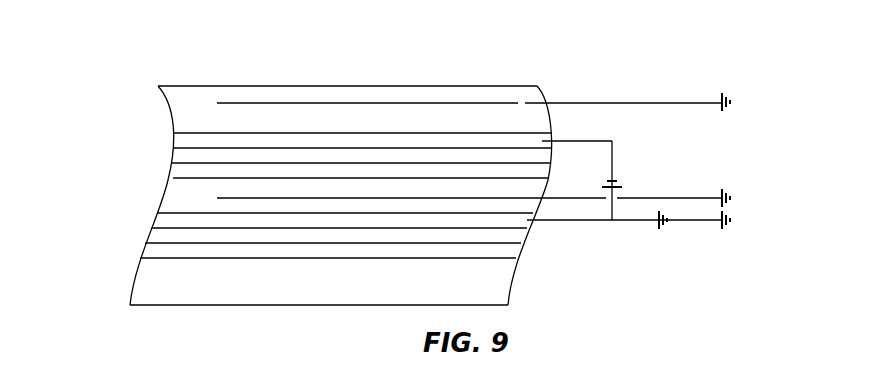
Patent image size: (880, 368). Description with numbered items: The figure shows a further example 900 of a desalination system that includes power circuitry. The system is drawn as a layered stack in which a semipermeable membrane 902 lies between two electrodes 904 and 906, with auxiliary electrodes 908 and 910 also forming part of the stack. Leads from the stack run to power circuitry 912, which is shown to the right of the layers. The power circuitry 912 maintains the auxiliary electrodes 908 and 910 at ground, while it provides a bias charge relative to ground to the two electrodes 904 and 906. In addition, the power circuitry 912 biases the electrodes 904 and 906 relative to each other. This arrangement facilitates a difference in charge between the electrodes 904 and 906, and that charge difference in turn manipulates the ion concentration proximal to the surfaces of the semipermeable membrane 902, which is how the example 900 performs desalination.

The example 900 is at (442, 182).
The semipermeable membrane 902 is at (177, 162).
The electrode 904 is at (172, 220).
The electrode 906 is at (187, 139).
The auxiliary electrode 908 is at (305, 198).
The auxiliary electrode 910 is at (407, 102).
The power circuitry 912 is at (753, 82).